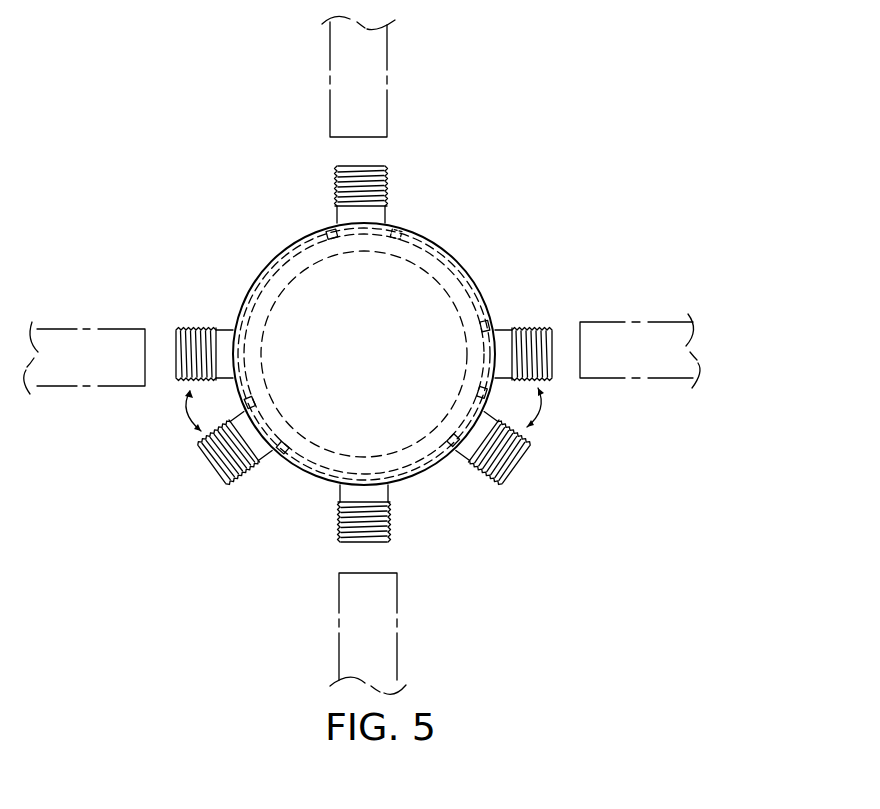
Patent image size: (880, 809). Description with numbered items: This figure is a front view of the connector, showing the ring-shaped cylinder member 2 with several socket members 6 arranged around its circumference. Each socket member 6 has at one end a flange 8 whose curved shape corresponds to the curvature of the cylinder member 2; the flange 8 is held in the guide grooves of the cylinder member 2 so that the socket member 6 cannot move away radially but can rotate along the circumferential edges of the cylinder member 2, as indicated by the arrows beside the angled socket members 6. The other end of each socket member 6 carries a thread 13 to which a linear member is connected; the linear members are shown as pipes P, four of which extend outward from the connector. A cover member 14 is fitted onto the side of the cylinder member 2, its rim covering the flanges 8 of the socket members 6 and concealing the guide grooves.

The cylinder member 2 is at (438, 261).
The socket member 6 is at (376, 344).
The flange 8 is at (327, 226).
The thread 13 is at (336, 172).
The cover member 14 is at (478, 287).
The pipe P is at (388, 80).